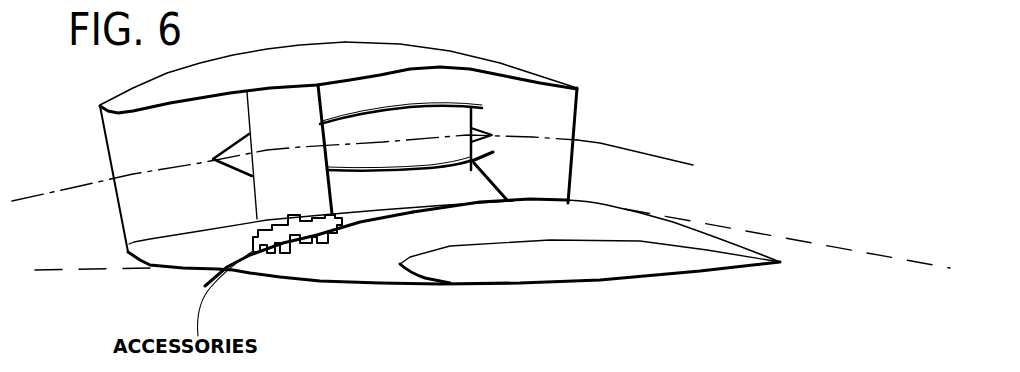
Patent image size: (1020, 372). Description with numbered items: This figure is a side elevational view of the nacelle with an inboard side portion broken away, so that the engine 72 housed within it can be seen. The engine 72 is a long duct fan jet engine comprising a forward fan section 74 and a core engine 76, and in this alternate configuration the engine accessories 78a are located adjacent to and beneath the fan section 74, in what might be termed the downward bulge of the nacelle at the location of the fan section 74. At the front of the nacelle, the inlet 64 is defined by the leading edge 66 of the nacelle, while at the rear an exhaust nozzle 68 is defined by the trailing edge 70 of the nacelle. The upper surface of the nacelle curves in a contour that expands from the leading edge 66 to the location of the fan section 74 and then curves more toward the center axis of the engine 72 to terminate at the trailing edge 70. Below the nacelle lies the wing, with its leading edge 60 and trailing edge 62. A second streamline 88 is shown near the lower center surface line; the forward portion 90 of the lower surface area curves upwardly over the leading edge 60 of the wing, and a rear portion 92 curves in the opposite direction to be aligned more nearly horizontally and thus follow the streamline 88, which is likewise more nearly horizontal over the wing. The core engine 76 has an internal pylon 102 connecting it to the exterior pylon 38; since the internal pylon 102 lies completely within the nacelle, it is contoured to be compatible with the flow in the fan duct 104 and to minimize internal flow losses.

The exterior pylon 38 is at (583, 220).
The leading edge 60 is at (400, 264).
The trailing edge 62 is at (785, 262).
The inlet 64 is at (130, 150).
The leading edge 66 is at (100, 106).
The exhaust nozzle 68 is at (562, 126).
The trailing edge 70 is at (578, 88).
The engine 72 is at (372, 97).
The forward fan section 74 is at (285, 99).
The core engine 76 is at (435, 120).
The engine accessories 78a is at (268, 255).
The second streamline 88 is at (96, 271).
The forward portion of surface area 90 is at (325, 257).
The rear portion of surface area 92 is at (512, 201).
The internal pylon 102 is at (473, 184).
The fan duct 104 is at (449, 96).